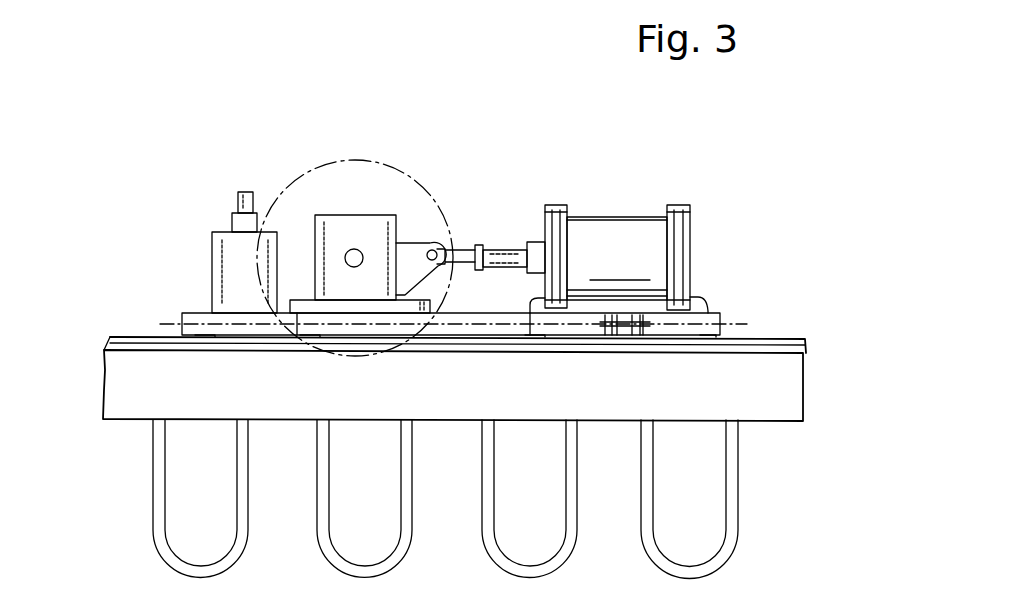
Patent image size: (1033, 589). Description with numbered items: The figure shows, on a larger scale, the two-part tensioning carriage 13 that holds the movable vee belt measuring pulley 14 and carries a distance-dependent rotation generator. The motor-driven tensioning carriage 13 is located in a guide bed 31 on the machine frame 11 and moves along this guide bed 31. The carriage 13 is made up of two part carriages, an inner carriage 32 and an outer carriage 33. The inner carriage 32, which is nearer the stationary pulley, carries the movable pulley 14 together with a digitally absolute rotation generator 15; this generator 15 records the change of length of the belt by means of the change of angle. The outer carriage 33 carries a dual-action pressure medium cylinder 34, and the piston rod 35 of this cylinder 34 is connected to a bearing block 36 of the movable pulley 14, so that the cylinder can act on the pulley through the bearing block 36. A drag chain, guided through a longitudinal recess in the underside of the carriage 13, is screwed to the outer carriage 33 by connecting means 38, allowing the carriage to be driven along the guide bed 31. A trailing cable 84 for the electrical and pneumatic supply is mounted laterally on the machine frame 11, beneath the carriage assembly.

The machine frame 11 is at (783, 396).
The tensioning carriage 13 is at (498, 148).
The movable vee belt measuring pulley 14 is at (352, 160).
The digitally absolute rotation generator 15 is at (217, 270).
The guide bed 31 is at (788, 340).
The inner carriage 32 is at (459, 322).
The outer carriage 33 is at (722, 313).
The dual-action pressure medium cylinder 34 is at (622, 232).
The piston rod 35 is at (510, 258).
The bearing block 36 is at (342, 217).
The connecting means 38 is at (623, 323).
The trailing cable 84 is at (735, 537).